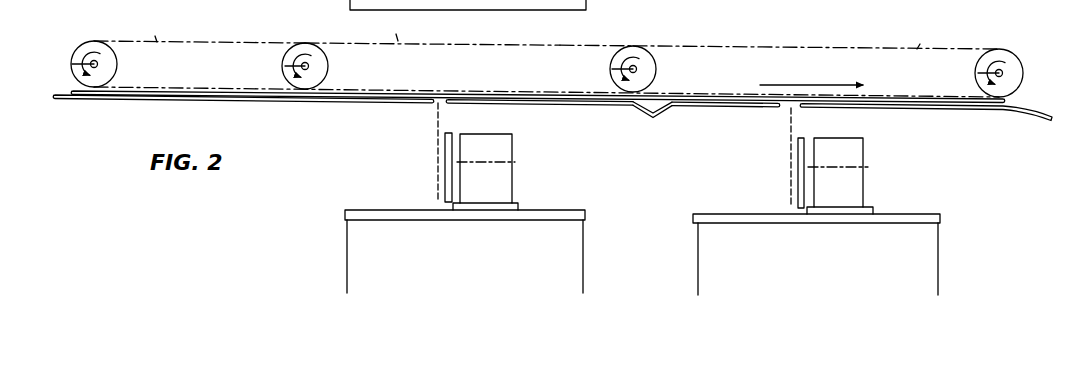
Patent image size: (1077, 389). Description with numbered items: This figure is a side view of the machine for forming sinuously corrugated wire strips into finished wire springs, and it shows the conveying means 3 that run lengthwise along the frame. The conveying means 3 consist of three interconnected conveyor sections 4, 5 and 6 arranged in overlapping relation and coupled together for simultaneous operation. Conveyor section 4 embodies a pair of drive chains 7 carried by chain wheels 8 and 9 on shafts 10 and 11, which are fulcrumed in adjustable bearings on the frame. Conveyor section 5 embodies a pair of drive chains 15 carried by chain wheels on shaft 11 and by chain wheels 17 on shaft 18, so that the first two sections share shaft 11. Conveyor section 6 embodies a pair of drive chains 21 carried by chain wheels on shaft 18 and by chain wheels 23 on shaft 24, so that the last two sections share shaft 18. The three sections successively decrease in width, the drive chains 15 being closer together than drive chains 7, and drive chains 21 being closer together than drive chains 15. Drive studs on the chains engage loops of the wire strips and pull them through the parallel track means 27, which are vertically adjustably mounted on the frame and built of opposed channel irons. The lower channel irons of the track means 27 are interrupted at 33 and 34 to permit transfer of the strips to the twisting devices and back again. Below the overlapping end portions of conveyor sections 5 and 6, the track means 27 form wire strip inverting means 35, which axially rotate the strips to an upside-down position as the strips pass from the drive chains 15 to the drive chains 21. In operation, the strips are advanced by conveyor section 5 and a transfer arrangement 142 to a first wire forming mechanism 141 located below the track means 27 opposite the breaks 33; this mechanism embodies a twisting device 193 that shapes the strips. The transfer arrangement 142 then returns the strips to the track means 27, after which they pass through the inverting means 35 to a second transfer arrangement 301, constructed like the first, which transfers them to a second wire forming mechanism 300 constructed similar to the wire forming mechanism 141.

The conveying means 3 is at (581, 43).
The conveyor section 4 is at (224, 38).
The conveyor section 5 is at (484, 42).
The conveyor section 6 is at (800, 45).
The drive chains 7 is at (152, 29).
The chain wheels 8 is at (118, 64).
The chain wheels 9 is at (330, 67).
The shaft 10 is at (72, 64).
The shaft 11 is at (285, 66).
The drive chains 15 is at (383, 29).
The chain wheels 17 is at (657, 68).
The shaft 18 is at (612, 69).
The drive chains 21 is at (922, 36).
The chain wheels 23 is at (1018, 80).
The shaft 24 is at (978, 73).
The track means 27 is at (173, 101).
The interruption in lower channel irons 33 is at (435, 110).
The interruption in lower channel irons 34 is at (787, 112).
The wire strip inverting means 35 is at (636, 113).
The wire forming mechanism 141 is at (520, 138).
The transfer arrangement 142 is at (436, 159).
The twisting device 193 is at (507, 192).
The wire forming mechanism 300 is at (865, 177).
The transfer arrangement 301 is at (788, 153).